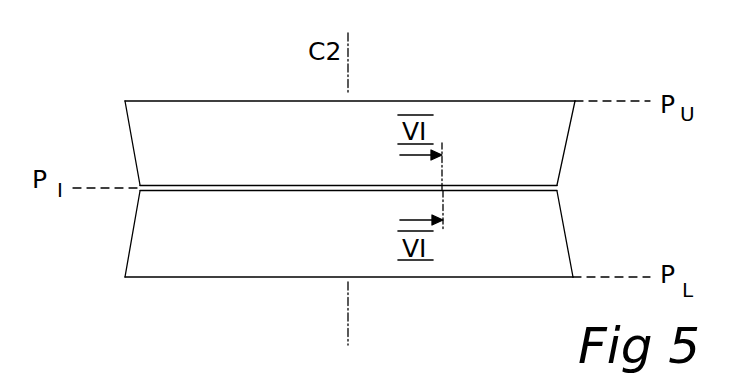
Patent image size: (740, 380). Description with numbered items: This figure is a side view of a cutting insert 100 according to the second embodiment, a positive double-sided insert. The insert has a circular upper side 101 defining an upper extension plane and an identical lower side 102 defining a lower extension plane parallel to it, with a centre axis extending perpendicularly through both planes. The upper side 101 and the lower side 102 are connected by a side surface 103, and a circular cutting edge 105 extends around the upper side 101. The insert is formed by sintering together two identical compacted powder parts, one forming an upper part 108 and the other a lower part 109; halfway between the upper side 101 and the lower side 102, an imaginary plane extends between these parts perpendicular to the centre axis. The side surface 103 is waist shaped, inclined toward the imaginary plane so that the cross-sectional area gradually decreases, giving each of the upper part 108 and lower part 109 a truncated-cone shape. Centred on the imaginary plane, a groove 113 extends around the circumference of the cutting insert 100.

The cutting insert 100 is at (155, 76).
The upper side 101 is at (480, 100).
The lower side 102 is at (218, 277).
The side surface 103 is at (266, 155).
The cutting edge 105 is at (575, 100).
The upper part 108 is at (145, 143).
The lower part 109 is at (138, 252).
The groove 113 is at (557, 188).